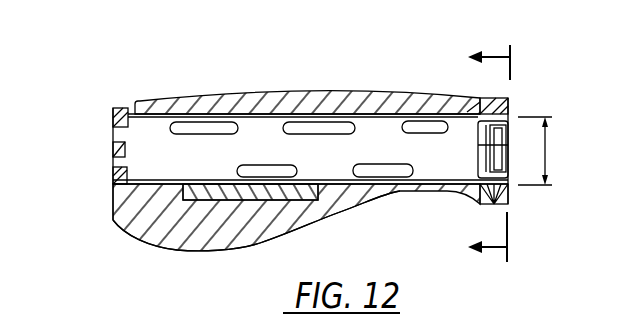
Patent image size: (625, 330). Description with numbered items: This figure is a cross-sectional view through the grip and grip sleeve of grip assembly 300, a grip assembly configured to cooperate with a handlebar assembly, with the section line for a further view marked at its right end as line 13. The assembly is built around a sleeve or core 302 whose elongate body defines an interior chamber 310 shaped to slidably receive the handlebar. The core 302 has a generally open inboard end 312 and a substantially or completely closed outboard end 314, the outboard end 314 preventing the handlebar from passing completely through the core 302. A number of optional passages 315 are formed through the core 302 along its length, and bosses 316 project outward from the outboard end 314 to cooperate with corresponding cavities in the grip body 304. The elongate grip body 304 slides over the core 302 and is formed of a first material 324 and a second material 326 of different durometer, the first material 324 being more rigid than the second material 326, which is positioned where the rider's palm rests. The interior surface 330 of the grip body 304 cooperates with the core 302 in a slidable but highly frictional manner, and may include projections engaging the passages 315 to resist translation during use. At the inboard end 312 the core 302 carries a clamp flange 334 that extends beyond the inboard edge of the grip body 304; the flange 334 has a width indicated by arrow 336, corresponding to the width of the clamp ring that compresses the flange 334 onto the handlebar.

The grip assembly 300 is at (358, 10).
The core 302 is at (158, 127).
The grip body 304 is at (372, 90).
The interior chamber 310 is at (516, 145).
The inboard end 312 is at (530, 206).
The outboard end 314 is at (103, 114).
The passages 315 is at (200, 135).
The bosses 316 is at (113, 145).
The first material 324 is at (142, 237).
The second material 326 is at (277, 195).
The interior surface 330 is at (409, 190).
The clamp flange 334 is at (510, 115).
The arrow indicating clamp flange width 336 is at (547, 156).
The section line 13- 13 is at (486, 150).